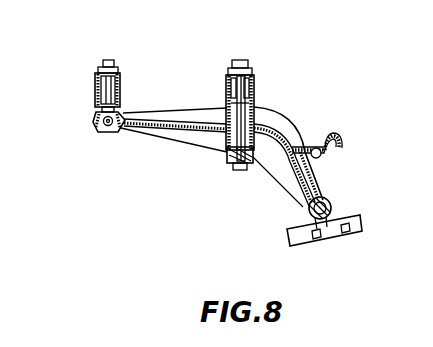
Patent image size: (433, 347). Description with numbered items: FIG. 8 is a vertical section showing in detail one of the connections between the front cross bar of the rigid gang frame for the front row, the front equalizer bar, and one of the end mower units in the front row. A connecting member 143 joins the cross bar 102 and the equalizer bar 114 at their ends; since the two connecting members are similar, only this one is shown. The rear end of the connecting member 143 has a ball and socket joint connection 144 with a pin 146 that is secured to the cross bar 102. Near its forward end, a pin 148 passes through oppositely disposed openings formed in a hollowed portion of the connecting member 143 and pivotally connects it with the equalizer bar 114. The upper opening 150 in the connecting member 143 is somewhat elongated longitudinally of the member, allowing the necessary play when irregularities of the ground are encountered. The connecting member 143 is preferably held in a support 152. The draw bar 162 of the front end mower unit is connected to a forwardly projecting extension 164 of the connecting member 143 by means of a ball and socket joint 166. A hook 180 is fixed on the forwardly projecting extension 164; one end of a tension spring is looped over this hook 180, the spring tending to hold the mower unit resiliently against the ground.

The cross bar 102 is at (120, 80).
The equalizer bar 114 is at (249, 80).
The connecting member 143 is at (192, 137).
The ball and socket joint connection 144 is at (110, 132).
The pin 146 is at (96, 92).
The pin 148 is at (252, 90).
The upper opening 150 is at (253, 106).
The support 152 is at (252, 165).
The draw bar 162 is at (305, 236).
The forwardly projecting extension 164 is at (288, 131).
The ball and socket joint 166 is at (331, 205).
The hook 180 is at (343, 149).